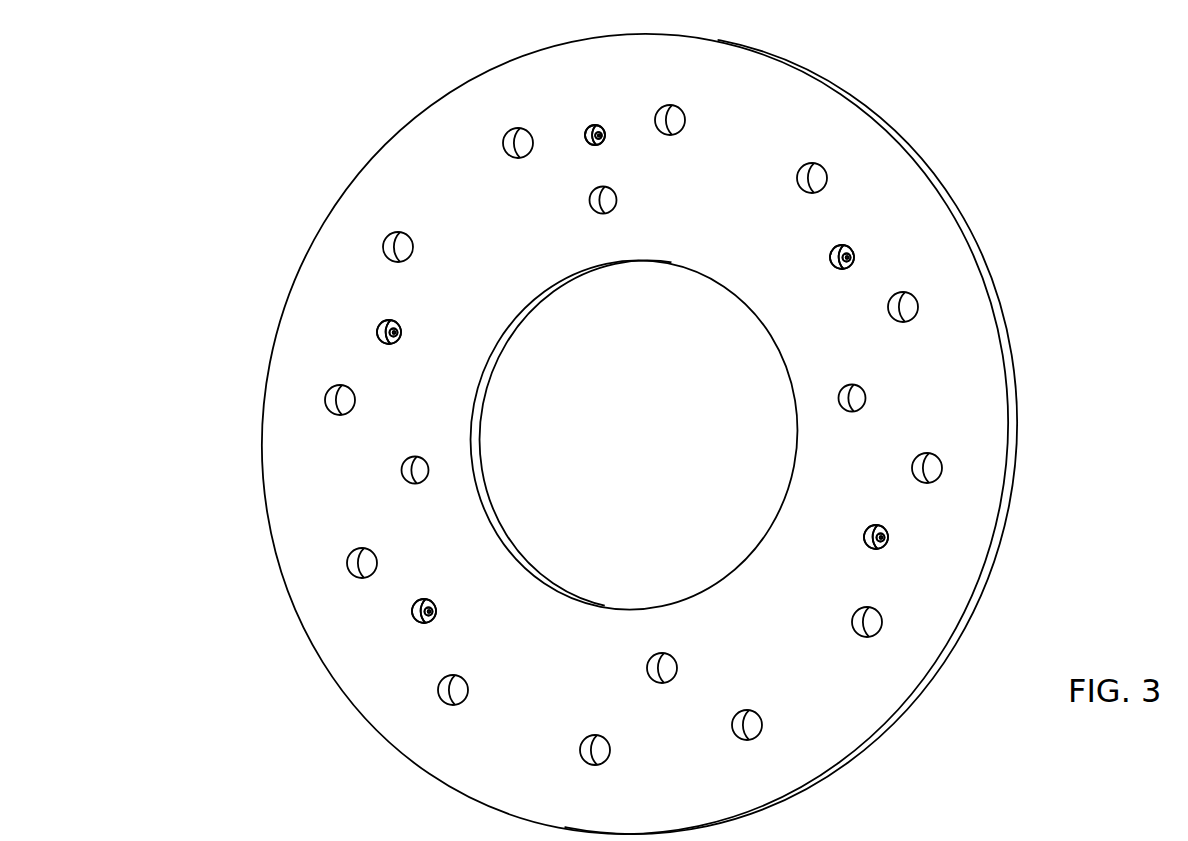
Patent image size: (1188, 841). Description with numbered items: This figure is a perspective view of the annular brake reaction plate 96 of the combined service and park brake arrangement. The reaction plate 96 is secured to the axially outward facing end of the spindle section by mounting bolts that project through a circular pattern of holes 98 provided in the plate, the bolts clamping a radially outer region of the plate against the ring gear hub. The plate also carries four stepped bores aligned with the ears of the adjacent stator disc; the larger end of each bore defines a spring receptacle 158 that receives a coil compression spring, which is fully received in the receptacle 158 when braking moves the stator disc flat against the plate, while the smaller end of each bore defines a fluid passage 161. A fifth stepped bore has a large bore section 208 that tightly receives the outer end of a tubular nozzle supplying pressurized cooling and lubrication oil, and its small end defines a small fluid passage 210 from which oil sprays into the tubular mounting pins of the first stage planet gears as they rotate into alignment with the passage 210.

The brake reaction plate 96 is at (262, 341).
The holes 98 is at (527, 147).
The receptacle 158 is at (377, 332).
The fluid passage 161 is at (854, 259).
The large bore section 208 is at (594, 126).
The small fluid passage 210 is at (600, 143).